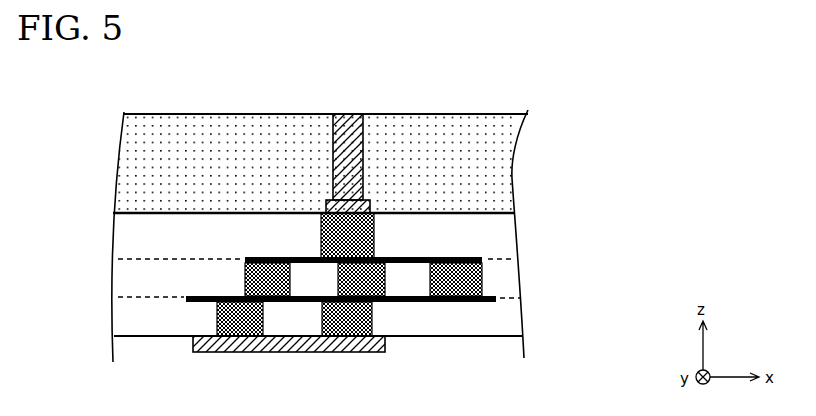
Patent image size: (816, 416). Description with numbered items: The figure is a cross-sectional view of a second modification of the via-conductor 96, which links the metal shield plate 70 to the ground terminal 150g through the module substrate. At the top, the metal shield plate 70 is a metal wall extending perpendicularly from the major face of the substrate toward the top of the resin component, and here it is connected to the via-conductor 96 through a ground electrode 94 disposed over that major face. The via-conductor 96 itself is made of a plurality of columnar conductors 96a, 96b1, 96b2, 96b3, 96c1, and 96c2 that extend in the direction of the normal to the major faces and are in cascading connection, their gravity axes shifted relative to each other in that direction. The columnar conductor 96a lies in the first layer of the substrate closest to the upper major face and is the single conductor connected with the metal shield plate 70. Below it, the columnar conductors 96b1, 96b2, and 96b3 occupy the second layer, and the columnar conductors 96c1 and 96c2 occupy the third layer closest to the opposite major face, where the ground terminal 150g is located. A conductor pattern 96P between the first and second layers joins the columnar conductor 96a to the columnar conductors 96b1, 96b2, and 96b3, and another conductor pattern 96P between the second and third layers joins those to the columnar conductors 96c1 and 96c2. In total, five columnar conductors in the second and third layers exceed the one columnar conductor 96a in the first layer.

The metal shield plate 70 is at (361, 165).
The ground electrode 94 is at (365, 207).
The via-conductor 96 is at (422, 286).
The columnar conductor 96a is at (375, 233).
The columnar conductor 96b1 is at (290, 273).
The columnar conductor 96b2 is at (345, 272).
The columnar conductor 96b3 is at (440, 291).
The columnar conductor 96c1 is at (263, 313).
The columnar conductor 96c2 is at (340, 321).
The conductor pattern 96P is at (243, 258).
The ground terminal 150g is at (193, 344).